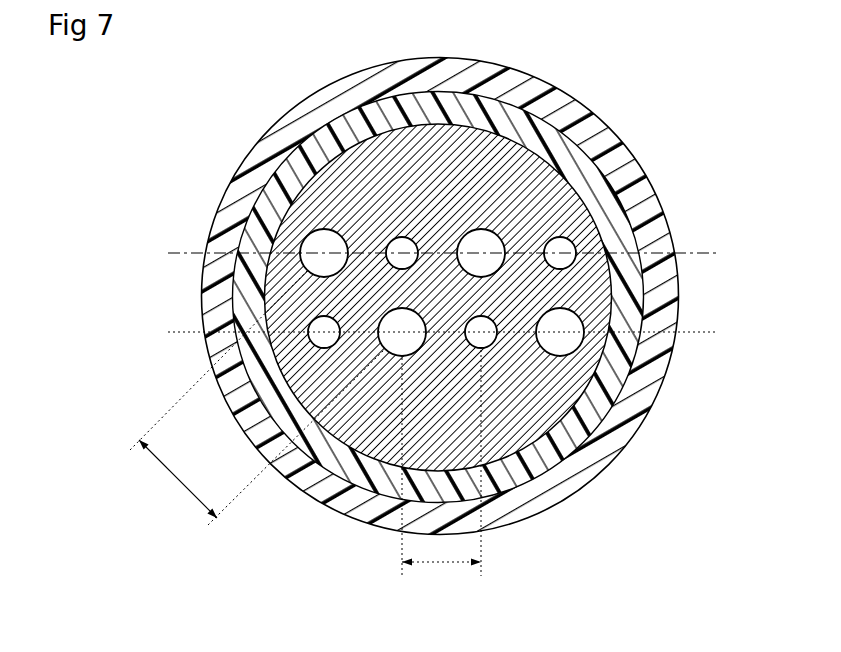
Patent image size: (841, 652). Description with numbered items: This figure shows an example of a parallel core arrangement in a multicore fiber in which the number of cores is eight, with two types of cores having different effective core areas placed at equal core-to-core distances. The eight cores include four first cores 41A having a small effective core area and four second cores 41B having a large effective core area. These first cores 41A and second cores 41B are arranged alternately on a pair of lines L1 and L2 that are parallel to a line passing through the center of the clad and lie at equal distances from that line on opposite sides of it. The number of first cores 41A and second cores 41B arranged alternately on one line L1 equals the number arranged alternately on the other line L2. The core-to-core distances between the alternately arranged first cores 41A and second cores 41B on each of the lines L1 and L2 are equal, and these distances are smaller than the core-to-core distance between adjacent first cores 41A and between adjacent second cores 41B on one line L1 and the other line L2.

The first cores 41A is at (400, 237).
The second cores 41B is at (306, 237).
The line L1 is at (703, 253).
The other line L2 is at (703, 332).